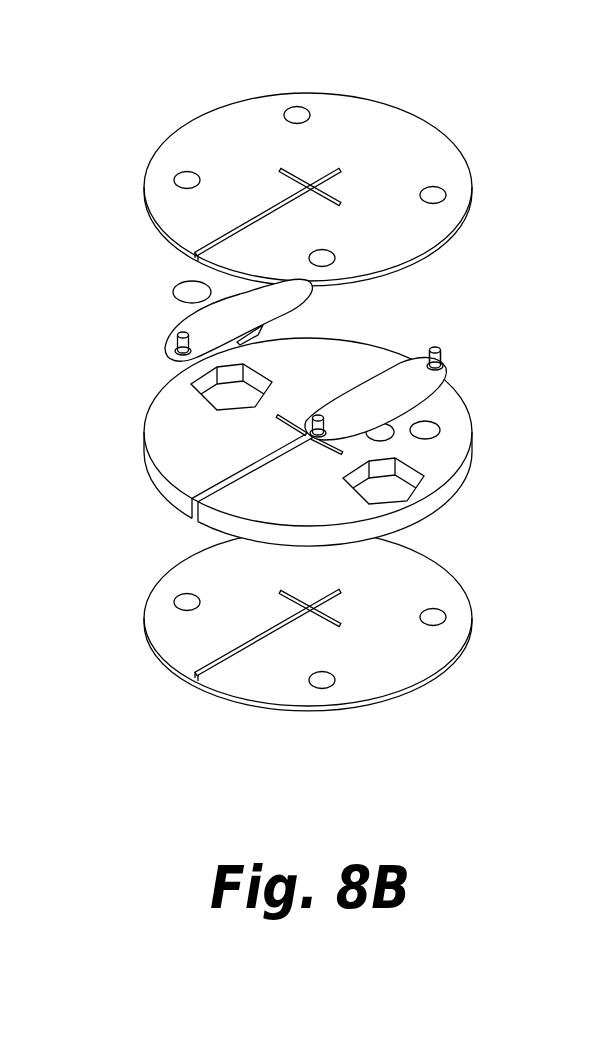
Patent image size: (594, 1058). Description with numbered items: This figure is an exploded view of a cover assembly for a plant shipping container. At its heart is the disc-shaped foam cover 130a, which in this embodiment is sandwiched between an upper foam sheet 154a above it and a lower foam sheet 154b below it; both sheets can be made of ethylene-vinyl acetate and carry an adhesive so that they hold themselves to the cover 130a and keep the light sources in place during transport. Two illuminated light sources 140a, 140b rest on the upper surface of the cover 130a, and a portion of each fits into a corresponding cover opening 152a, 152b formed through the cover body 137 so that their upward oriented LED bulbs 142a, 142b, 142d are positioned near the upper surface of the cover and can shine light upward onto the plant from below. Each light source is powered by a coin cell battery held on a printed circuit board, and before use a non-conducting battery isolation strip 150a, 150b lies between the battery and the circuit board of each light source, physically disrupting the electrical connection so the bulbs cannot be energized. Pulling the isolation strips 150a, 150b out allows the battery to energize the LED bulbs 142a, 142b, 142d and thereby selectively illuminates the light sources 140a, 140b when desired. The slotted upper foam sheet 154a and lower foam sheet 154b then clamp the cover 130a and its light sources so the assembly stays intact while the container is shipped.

The cover 130a is at (313, 389).
The middle disc body 137 is at (462, 475).
The light source 140a is at (245, 296).
The light source 140b is at (433, 378).
The LED bulb 142a is at (175, 348).
The LED bulb 142b is at (310, 428).
The LED bulb 142d is at (440, 355).
The battery isolation strip 150a is at (175, 295).
The battery isolation strip 150b is at (433, 428).
The cover opening 152a is at (193, 383).
The cover opening 152b is at (437, 487).
The upper foam sheet 154a is at (387, 130).
The lower foam sheet 154b is at (370, 673).